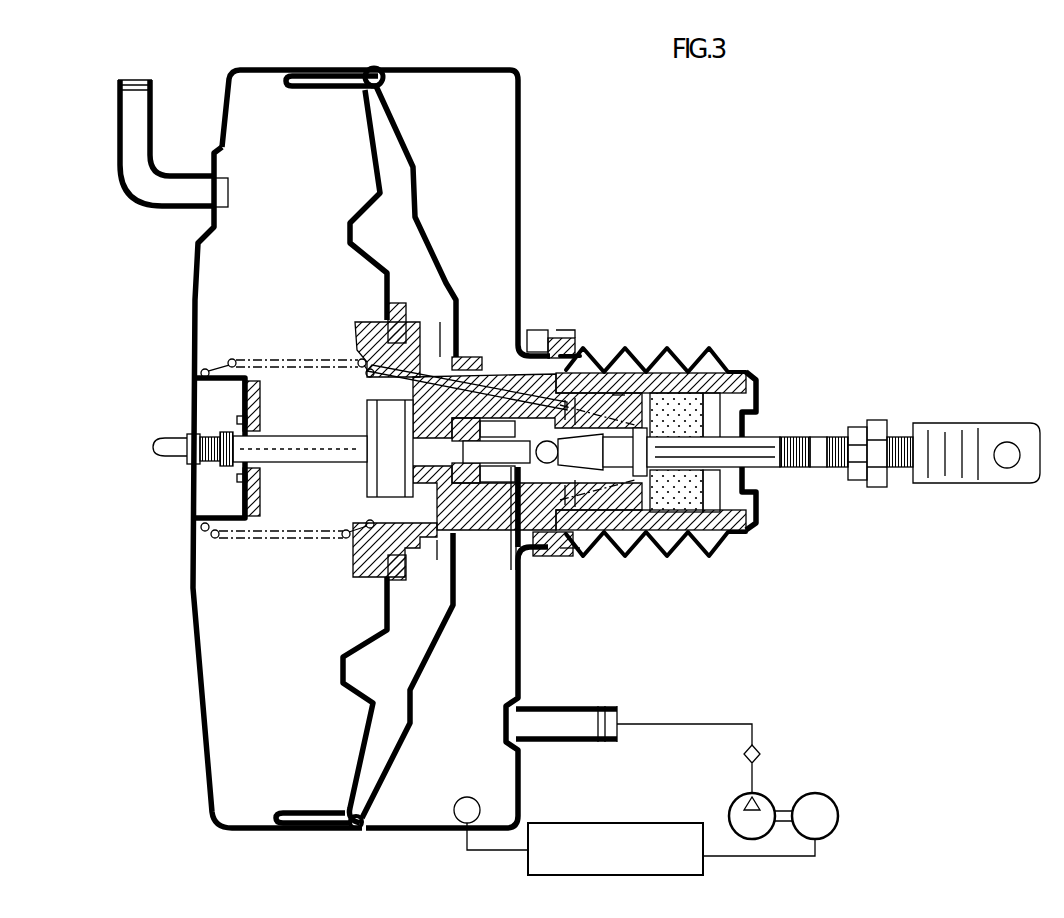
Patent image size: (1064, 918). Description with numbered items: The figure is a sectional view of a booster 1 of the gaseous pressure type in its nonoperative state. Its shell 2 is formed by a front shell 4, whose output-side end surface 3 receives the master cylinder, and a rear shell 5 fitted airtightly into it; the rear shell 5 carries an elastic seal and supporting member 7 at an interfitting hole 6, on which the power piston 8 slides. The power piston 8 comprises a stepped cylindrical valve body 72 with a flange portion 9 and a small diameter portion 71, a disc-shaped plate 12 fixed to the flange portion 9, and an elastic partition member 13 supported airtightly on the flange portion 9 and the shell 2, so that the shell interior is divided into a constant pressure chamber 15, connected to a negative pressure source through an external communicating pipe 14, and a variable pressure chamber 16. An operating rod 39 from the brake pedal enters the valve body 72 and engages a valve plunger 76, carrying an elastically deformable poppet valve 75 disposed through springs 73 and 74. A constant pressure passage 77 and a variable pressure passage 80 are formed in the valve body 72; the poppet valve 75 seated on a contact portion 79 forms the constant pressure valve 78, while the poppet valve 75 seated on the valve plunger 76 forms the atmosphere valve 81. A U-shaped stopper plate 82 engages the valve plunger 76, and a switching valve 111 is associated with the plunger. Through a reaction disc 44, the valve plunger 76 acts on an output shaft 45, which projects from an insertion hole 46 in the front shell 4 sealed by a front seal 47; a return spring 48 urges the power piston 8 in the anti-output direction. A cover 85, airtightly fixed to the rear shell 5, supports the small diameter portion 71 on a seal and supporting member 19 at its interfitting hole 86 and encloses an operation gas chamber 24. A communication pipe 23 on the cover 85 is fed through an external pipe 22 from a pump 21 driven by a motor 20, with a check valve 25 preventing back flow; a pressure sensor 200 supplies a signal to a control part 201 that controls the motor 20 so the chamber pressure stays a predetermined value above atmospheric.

The booster 1 is at (852, 243).
The shell 2 is at (216, 104).
The end surface 3 is at (191, 356).
The front shell 4 is at (193, 258).
The rear shell 5 is at (405, 142).
The interfitting hole 6 is at (476, 348).
The seal and supporting member 7 is at (448, 345).
The power piston 8 is at (346, 312).
The flange portion 9 is at (363, 322).
The plate 12 is at (348, 214).
The partition member 13 is at (380, 205).
The external communicating pipe 14 is at (122, 137).
The constant pressure chamber 15 is at (230, 283).
The variable pressure chamber 16 is at (400, 184).
The seal and supporting member 19 is at (560, 336).
The motor 20 is at (838, 806).
The pump 21 is at (732, 812).
The external pipe 22 is at (708, 720).
The communication pipe 23 is at (578, 741).
The operation gas chamber 24 is at (483, 665).
The check valve 25 is at (762, 752).
The operating rod 39 is at (812, 436).
The reaction disc 44 is at (372, 410).
The output shaft 45 is at (312, 466).
The insertion hole 46 is at (262, 468).
The front seal 47 is at (237, 474).
The return spring 48 is at (292, 358).
The small diameter portion 71 is at (536, 328).
The valve body 72 is at (541, 345).
The spring 73 is at (683, 360).
The spring 74 is at (650, 352).
The poppet valve 75 is at (624, 556).
The valve plunger 76 is at (536, 556).
The constant pressure passage 77 is at (497, 388).
The constant pressure valve 78 is at (577, 362).
The contact portion 79 is at (612, 372).
The variable pressure passage 80 is at (486, 532).
The atmosphere valve 81 is at (584, 552).
The stopper plate 82 is at (513, 568).
The cover 85 is at (525, 175).
The interfitting hole 86 is at (556, 557).
The switching valve 111 is at (437, 562).
The pressure sensor 200 is at (465, 797).
The control part 201 is at (642, 822).